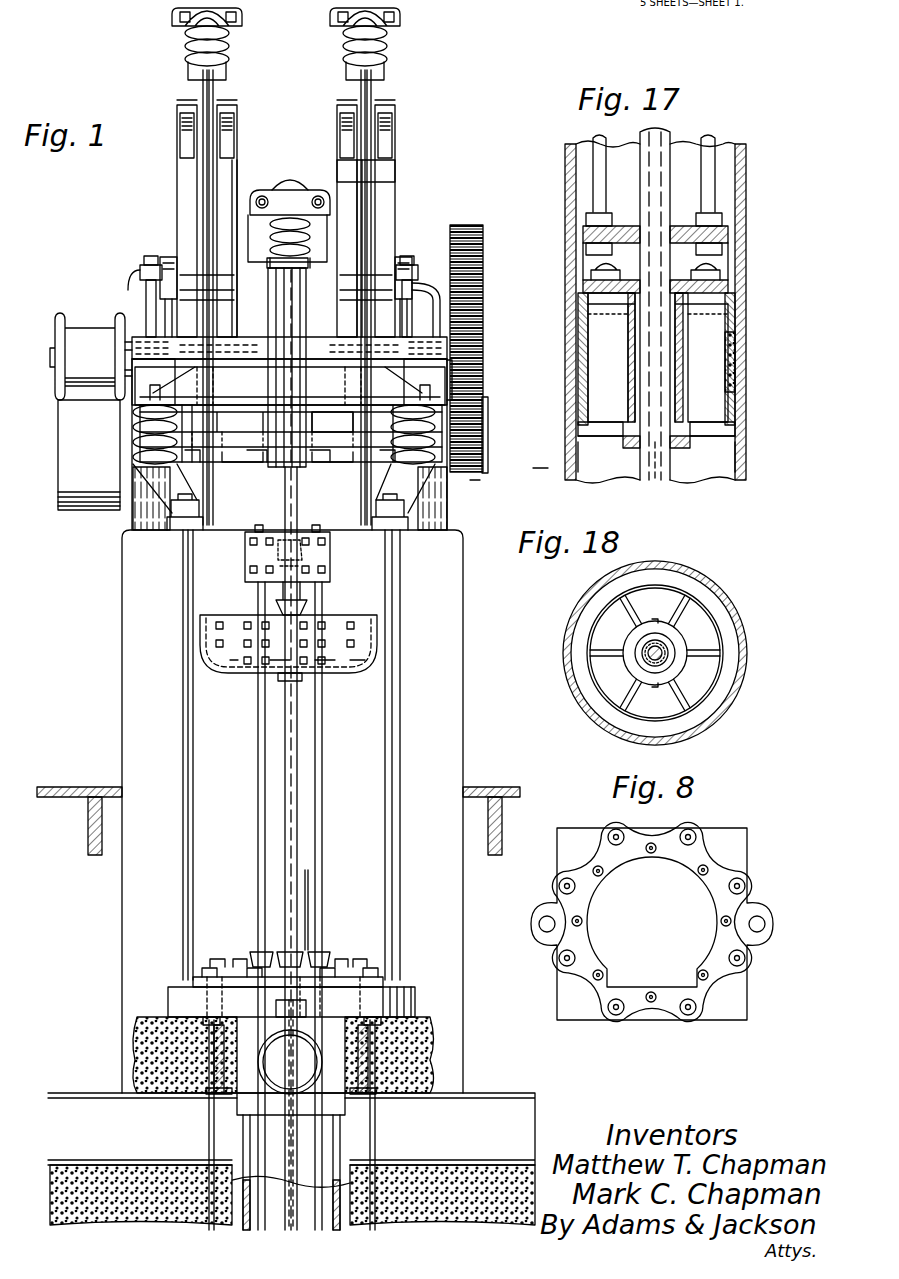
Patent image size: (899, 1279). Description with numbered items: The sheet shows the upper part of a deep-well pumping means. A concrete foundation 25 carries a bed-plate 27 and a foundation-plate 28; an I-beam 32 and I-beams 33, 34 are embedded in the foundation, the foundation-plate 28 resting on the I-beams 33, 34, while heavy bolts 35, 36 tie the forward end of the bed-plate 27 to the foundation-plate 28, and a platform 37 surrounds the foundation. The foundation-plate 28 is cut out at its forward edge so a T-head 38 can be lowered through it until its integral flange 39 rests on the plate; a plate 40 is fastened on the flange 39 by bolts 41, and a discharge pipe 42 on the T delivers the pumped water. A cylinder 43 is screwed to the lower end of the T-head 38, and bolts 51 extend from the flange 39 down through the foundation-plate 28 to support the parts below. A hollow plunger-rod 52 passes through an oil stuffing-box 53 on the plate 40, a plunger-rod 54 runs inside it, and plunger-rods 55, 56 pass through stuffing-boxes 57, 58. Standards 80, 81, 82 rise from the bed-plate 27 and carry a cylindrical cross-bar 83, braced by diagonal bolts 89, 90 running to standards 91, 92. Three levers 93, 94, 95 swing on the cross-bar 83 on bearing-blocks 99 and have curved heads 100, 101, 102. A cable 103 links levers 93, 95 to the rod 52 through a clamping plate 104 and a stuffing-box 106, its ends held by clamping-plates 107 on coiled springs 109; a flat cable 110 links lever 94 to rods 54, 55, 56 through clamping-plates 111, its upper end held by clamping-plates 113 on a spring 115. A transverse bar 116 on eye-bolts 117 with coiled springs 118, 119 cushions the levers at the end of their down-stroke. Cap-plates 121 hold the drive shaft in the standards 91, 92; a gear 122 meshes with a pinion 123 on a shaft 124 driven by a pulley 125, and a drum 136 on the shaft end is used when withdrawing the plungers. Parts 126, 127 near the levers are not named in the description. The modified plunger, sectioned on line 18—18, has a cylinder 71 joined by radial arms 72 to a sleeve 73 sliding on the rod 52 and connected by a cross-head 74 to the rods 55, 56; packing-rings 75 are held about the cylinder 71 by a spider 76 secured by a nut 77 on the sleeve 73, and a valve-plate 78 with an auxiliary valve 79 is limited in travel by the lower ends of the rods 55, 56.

In FIG. 1, the section line 18 is at (470, 480).
In FIG. 17, the section line 18 is at (756, 458).
In FIG. 1, the foundation 25 is at (128, 702).
In FIG. 1, the bed-plate 27 is at (345, 530).
In FIG. 1, the foundation-plate 28 is at (168, 1002).
In FIG. 8, the foundation-plate 28 is at (722, 852).
In FIG. 1, the I-beam 32 is at (68, 1093).
In FIG. 1, the I-beam 33 is at (212, 1070).
In FIG. 1, the I-beam 34 is at (370, 1070).
In FIG. 1, the heavy bolt 35 is at (183, 795).
In FIG. 1, the heavy bolt 36 is at (400, 780).
In FIG. 1, the platform 37 is at (52, 787).
In FIG. 1, the T-head 38 is at (340, 1105).
In FIG. 1, the flange 39 is at (193, 978).
In FIG. 1, the plate 40 is at (275, 968).
In FIG. 1, the bolts 41 is at (225, 946).
In FIG. 1, the discharge pipe 42 is at (322, 1030).
In FIG. 1, the cylinder 43 is at (268, 1150).
In FIG. 17, the cylinder 43 is at (738, 252).
In FIG. 18, the cylinder 43 is at (722, 600).
In FIG. 1, the bolts 51 is at (200, 1040).
In FIG. 1, the hollow plunger-rod 52 is at (287, 805).
In FIG. 17, the hollow plunger-rod 52 is at (647, 478).
In FIG. 18, the hollow plunger-rod 52 is at (660, 658).
In FIG. 1, the oil stuffing-box 53 is at (306, 950).
In FIG. 1, the plunger-rod 54 is at (300, 598).
In FIG. 17, the plunger-rod 54 is at (650, 132).
In FIG. 18, the plunger-rod 54 is at (645, 665).
In FIG. 1, the plunger-rod 55 is at (258, 760).
In FIG. 17, the plunger-rod 55 is at (598, 200).
In FIG. 1, the plunger-rod 56 is at (322, 793).
In FIG. 17, the plunger-rod 56 is at (707, 160).
In FIG. 1, the oil stuffing-box 57 is at (255, 952).
In FIG. 1, the oil stuffing-box 58 is at (318, 952).
In FIG. 17, the cylinder 71 is at (730, 305).
In FIG. 17, the radially-extending arms 72 is at (606, 318).
In FIG. 17, the sleeve 73 is at (680, 362).
In FIG. 17, the cross-head 74 is at (715, 200).
In FIG. 17, the packing-rings 75 is at (722, 382).
In FIG. 17, the spider 76 is at (704, 435).
In FIG. 18, the spider 76 is at (720, 625).
In FIG. 17, the nut 77 is at (600, 438).
In FIG. 18, the nut 77 is at (630, 650).
In FIG. 17, the valve-plate 78 is at (722, 282).
In FIG. 17, the auxiliary valve 79 is at (578, 276).
In FIG. 1, the standard 80 is at (356, 462).
In FIG. 1, the standard 81 is at (255, 462).
In FIG. 1, the standard 82 is at (218, 462).
In FIG. 1, the cylindrical cross-bar 83 is at (243, 300).
In FIG. 1, the diagonally-extending bolt 89 is at (420, 302).
In FIG. 1, the diagonally-extending bolt 90 is at (148, 300).
In FIG. 1, the standard 91 is at (447, 372).
In FIG. 1, the standard 92 is at (150, 372).
In FIG. 1, the lever 93 is at (382, 192).
In FIG. 1, the lever 94 is at (250, 225).
In FIG. 1, the lever 95 is at (240, 175).
In FIG. 1, the bearing-blocks 99 is at (372, 248).
In FIG. 1, the curved head 100 is at (357, 182).
In FIG. 1, the curved head 101 is at (302, 394).
In FIG. 1, the curved head 102 is at (197, 190).
In FIG. 1, the cable 103 is at (203, 90).
In FIG. 1, the clamping plate 104 is at (365, 632).
In FIG. 1, the oil stuffing-box 106 is at (300, 676).
In FIG. 1, the clamping-plate 107 is at (195, 25).
In FIG. 1, the coiled springs 109 is at (232, 48).
In FIG. 1, the flat cable 110 is at (290, 487).
In FIG. 1, the clamping-plate 111 is at (330, 578).
In FIG. 1, the clamping-plate 113 is at (296, 208).
In FIG. 1, the spring 115 is at (310, 242).
In FIG. 1, the transversely-extending bar 116 is at (242, 420).
In FIG. 1, the eye-bolts 117 is at (157, 410).
In FIG. 1, the coiled spring 118 is at (445, 470).
In FIG. 1, the coiled spring 119 is at (136, 440).
In FIG. 1, the cap-plates 121 is at (132, 338).
In FIG. 1, the gear 122 is at (448, 333).
In FIG. 1, the pinion 123 is at (486, 416).
In FIG. 1, the shaft 124 is at (337, 444).
In FIG. 1, the pulley 125 is at (68, 468).
In FIG. 1, the guide post 126 is at (358, 322).
In FIG. 1, the bolt 127 is at (232, 413).
In FIG. 1, the drum 136 is at (58, 352).